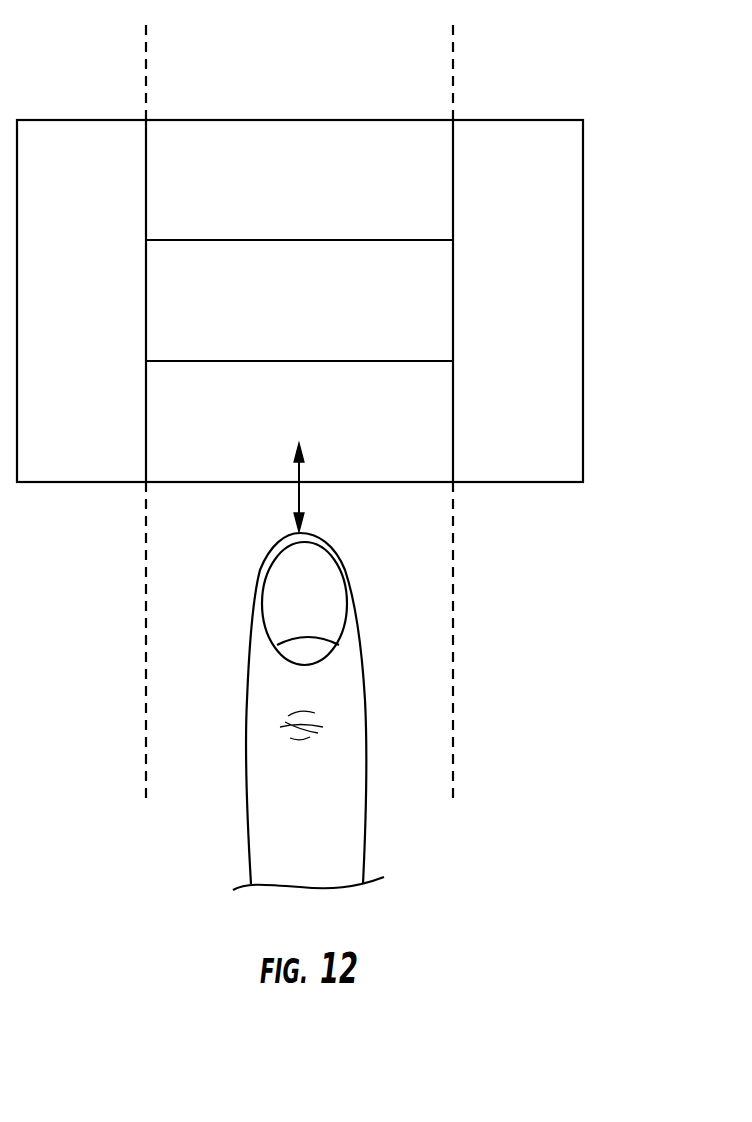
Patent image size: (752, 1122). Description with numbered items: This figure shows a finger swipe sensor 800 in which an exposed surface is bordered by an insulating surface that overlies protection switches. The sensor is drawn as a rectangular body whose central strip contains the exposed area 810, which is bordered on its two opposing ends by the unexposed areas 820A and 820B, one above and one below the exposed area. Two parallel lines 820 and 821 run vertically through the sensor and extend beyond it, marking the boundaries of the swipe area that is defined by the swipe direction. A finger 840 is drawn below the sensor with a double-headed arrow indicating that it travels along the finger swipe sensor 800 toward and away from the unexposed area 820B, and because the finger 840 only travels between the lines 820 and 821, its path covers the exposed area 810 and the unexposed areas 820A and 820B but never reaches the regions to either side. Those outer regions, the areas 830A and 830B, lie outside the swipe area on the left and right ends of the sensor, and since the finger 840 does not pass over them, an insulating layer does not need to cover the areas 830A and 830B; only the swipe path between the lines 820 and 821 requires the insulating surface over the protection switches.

The finger swipe sensor 800 is at (583, 303).
The exposed area 810 is at (320, 302).
The unexposed area 820A is at (323, 195).
The unexposed area 820B is at (322, 430).
The area 830A is at (97, 300).
The area 830B is at (540, 302).
The line 820 is at (146, 670).
The line 821 is at (453, 715).
The finger 840 is at (325, 813).